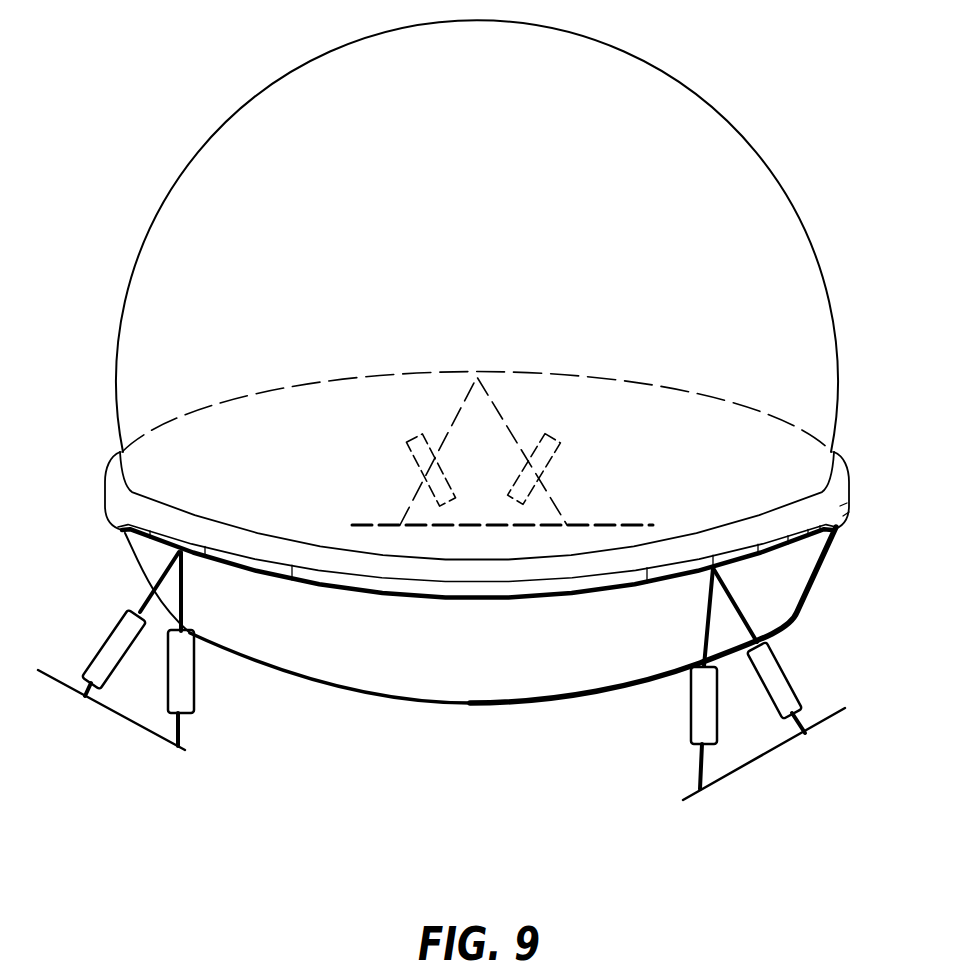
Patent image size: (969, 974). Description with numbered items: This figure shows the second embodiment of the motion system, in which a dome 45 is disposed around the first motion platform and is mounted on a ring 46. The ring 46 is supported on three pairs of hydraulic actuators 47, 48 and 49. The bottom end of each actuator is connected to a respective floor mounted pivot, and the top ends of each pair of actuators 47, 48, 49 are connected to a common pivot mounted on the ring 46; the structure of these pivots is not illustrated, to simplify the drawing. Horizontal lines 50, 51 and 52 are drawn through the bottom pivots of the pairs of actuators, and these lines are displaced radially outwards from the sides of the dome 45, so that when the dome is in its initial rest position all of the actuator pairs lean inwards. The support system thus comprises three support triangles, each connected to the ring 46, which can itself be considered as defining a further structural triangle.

The dome 45 is at (213, 172).
The ring 46 is at (127, 508).
The hydraulic actuators 47 is at (108, 653).
The hydraulic actuators 48 is at (418, 478).
The hydraulic actuators 49 is at (700, 712).
The horizontal line 50 is at (108, 717).
The horizontal line 51 is at (508, 524).
The horizontal line 52 is at (777, 750).